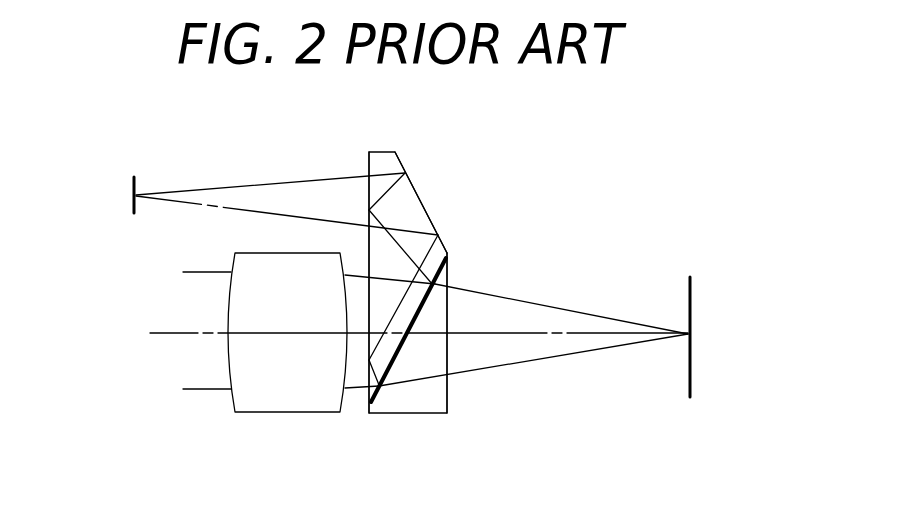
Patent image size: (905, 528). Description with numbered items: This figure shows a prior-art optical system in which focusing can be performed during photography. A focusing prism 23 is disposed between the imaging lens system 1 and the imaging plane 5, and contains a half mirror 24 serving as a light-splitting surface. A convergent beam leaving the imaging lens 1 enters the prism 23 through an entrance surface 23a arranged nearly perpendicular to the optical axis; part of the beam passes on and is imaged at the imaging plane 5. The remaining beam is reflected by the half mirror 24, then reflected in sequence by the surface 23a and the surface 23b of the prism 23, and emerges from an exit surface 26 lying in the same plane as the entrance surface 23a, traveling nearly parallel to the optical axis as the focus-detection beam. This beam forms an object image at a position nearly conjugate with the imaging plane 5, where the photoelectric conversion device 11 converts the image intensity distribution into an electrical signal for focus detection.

The photoelectric conversion device 11 is at (133, 180).
The imaging lens system 1 is at (247, 414).
The focusing prism 23 is at (432, 415).
The entrance surface 23a is at (367, 402).
The prism surface 23b is at (417, 192).
The half mirror 24 is at (449, 280).
The exit face of prism 26 is at (449, 394).
The imaging plane 5 is at (695, 373).